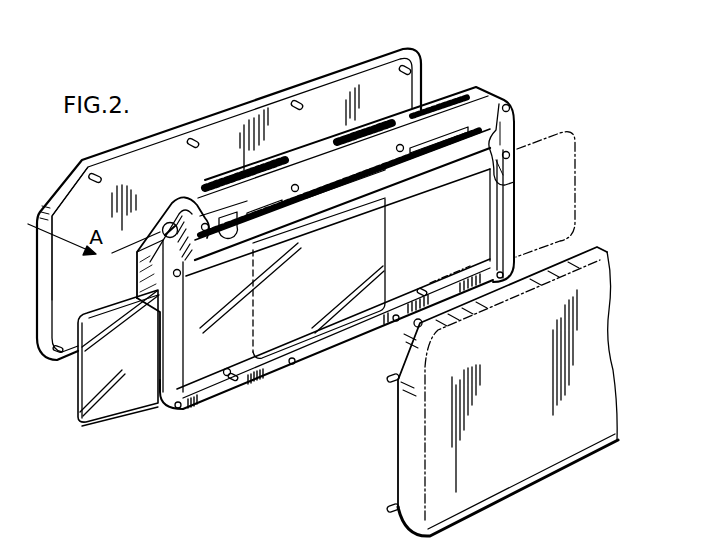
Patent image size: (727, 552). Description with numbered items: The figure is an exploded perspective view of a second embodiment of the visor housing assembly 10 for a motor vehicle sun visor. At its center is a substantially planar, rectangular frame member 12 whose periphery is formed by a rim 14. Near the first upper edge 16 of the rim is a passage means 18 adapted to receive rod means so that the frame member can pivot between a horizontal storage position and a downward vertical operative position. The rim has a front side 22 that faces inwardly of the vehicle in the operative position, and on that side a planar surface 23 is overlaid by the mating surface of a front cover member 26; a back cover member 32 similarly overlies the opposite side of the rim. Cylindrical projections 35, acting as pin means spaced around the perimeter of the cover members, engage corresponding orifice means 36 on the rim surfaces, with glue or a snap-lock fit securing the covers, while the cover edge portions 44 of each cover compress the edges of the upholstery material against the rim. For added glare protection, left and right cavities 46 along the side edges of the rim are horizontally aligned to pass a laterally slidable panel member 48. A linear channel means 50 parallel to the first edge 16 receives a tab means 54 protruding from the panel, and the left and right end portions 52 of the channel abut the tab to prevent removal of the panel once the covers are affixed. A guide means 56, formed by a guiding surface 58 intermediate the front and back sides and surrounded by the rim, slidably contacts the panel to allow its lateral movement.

The visor housing assembly 10 is at (468, 66).
The frame member 12 is at (511, 213).
The rim 14 is at (150, 280).
The first upper edge 16 is at (474, 102).
The passage means 18 is at (178, 214).
The front side 22 is at (504, 279).
The planar surface 23 is at (200, 405).
The front cover member 26 is at (558, 452).
The back cover member 32 is at (176, 130).
The cylindrical projections 35 is at (102, 181).
The orifice means 36 is at (177, 410).
The cover edge portions 44 is at (67, 182).
The left and right cavities 46 is at (167, 347).
The laterally slidable panel member 48 is at (88, 422).
The linear channel means 50 is at (386, 308).
The left and right end portions 52 is at (235, 383).
The tab means 54 is at (228, 368).
The guide means 56 is at (428, 194).
The guiding surface 58 is at (513, 130).